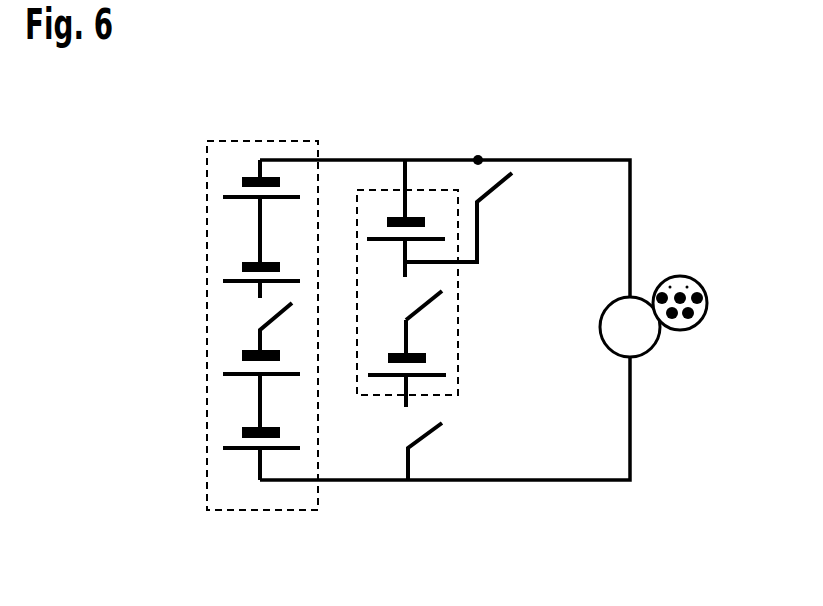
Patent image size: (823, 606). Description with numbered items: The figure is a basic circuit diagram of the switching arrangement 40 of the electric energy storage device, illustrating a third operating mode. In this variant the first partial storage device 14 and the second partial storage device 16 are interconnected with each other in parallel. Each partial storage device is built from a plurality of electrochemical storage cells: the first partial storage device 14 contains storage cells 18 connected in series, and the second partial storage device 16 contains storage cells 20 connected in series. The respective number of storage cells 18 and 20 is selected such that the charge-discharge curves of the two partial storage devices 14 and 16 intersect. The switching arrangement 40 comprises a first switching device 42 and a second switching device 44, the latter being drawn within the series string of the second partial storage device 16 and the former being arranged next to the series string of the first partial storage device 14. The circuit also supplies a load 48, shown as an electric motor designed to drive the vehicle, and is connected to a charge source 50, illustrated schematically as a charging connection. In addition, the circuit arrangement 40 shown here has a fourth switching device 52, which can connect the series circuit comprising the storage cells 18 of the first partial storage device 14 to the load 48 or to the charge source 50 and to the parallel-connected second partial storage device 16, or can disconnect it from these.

The first partial storage device 14 is at (459, 404).
The second partial storage device 16 is at (324, 519).
The storage cell 18 is at (391, 210).
The storage cell 20 is at (257, 174).
The switching arrangement 40 is at (440, 104).
The first switching device 42 is at (502, 149).
The second switching device 44 is at (234, 323).
The load 48 is at (661, 341).
The charge source 50 is at (689, 282).
The fourth switching device 52 is at (399, 441).